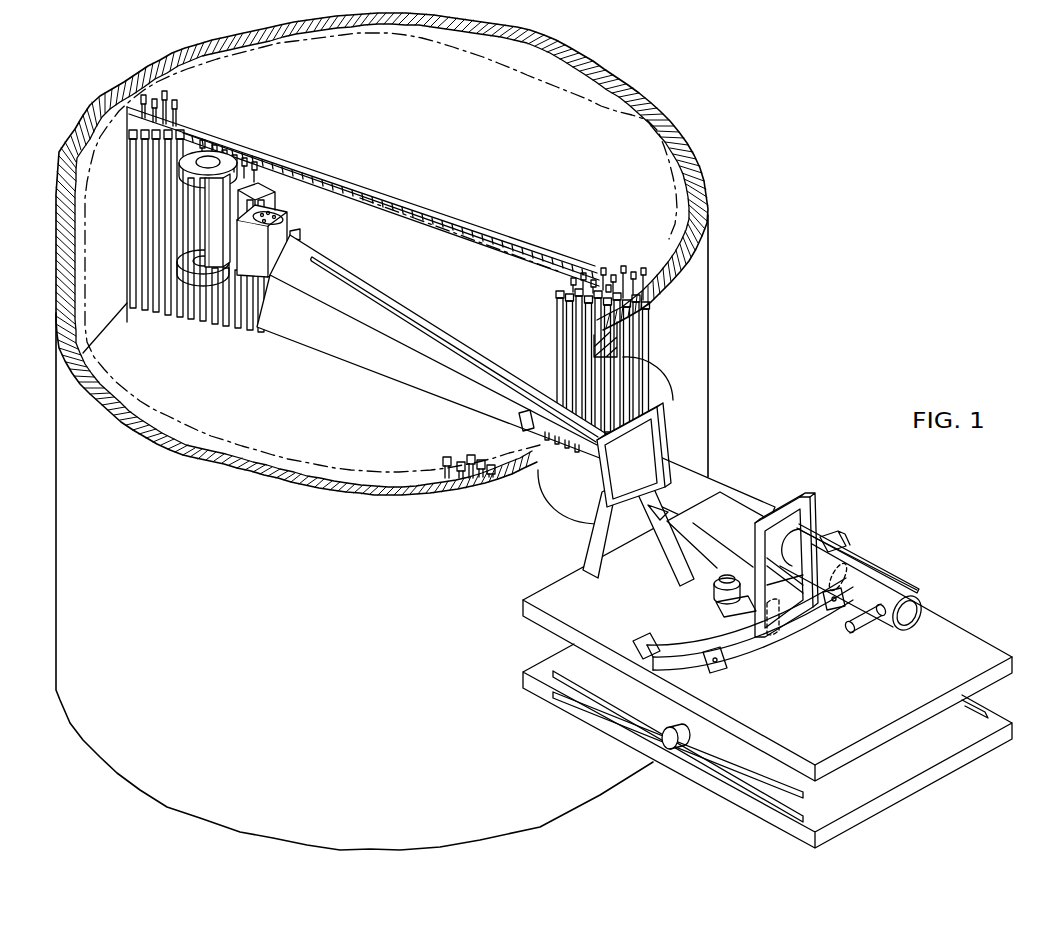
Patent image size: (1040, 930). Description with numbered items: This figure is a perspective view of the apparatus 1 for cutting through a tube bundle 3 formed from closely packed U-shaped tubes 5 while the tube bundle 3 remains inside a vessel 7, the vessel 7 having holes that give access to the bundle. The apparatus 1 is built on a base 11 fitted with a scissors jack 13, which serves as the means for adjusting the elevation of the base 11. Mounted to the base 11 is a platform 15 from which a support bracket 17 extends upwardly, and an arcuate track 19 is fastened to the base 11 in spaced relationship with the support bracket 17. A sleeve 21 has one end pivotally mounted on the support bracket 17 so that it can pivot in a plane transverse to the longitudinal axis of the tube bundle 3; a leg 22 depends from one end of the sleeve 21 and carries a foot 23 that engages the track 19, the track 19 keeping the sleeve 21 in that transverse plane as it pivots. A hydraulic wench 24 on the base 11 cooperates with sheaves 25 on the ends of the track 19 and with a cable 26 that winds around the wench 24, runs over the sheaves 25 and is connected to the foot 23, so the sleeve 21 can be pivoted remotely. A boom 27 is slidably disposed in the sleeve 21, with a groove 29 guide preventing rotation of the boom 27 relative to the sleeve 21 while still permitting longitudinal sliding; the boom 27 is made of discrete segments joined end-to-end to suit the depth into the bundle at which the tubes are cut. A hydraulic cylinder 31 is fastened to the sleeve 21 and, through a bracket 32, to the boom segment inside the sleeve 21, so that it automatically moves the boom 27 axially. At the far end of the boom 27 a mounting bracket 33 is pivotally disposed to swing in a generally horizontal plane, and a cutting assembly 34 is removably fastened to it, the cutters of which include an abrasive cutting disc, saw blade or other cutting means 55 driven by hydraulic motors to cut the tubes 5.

The apparatus 1 is at (772, 427).
The tube bundle 3 is at (172, 104).
The U-shaped tubes 5 is at (168, 318).
The vessel 7 is at (700, 291).
The base 11 is at (943, 773).
The scissors jack 13 is at (706, 750).
The platform 15 is at (967, 645).
The support bracket 17 is at (598, 535).
The arcuate track 19 is at (742, 650).
The sleeve 21 is at (712, 484).
The leg 22 is at (770, 630).
The foot 23 is at (745, 611).
The hydraulic wench 24 is at (713, 590).
The sheaves 25 is at (665, 640).
The cable 26 is at (672, 618).
The boom 27 is at (464, 358).
The groove 29 is at (370, 287).
The hydraulic cylinder 31 is at (718, 535).
The bracket 32 is at (518, 425).
The mounting bracket 33 is at (268, 200).
The cutting assembly 34 is at (217, 233).
The cutting means 55 is at (227, 172).